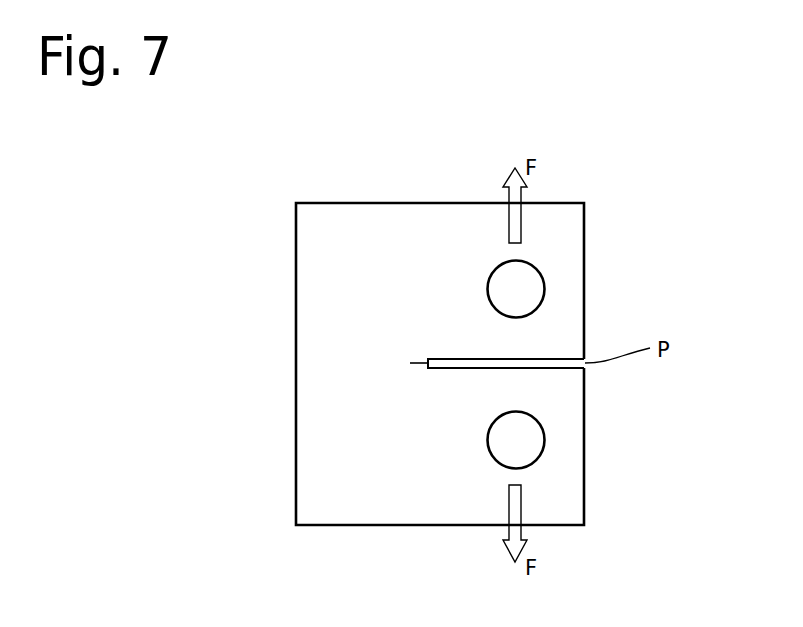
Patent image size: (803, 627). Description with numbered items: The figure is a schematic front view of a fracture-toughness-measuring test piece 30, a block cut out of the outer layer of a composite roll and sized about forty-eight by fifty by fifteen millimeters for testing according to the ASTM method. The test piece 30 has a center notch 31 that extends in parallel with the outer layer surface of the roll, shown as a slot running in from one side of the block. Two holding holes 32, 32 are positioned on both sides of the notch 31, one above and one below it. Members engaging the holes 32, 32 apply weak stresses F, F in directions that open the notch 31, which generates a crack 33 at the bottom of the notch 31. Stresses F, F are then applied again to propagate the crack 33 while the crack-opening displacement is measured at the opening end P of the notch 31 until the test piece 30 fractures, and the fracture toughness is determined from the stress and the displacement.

The test piece 30 is at (603, 213).
The center notch 31 is at (520, 363).
The holding holes 32 is at (537, 286).
The crack 33 is at (410, 363).